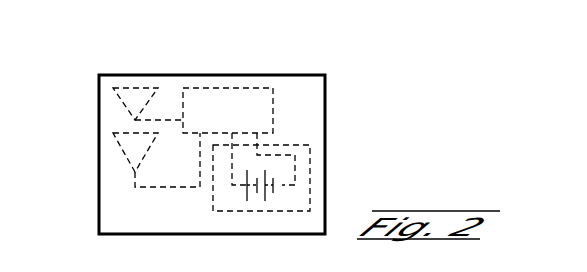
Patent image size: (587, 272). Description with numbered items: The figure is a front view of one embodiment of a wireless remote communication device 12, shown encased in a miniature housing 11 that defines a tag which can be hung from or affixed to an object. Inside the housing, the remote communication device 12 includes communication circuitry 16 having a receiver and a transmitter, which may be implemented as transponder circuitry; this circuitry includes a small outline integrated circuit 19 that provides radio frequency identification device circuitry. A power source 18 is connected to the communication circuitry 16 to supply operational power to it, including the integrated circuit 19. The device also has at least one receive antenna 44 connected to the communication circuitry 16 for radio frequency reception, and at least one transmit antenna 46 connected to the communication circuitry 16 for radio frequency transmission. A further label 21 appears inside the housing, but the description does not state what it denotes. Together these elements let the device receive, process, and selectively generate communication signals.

The miniature housing 11 is at (98, 201).
The remote communication device 12 is at (338, 108).
The communication circuitry 16 is at (287, 100).
The power source 18 is at (312, 176).
The small outline integrated circuit 19 is at (249, 86).
The ground 21 is at (152, 224).
The receive antenna 44 is at (141, 86).
The transmit antenna 46 is at (121, 149).